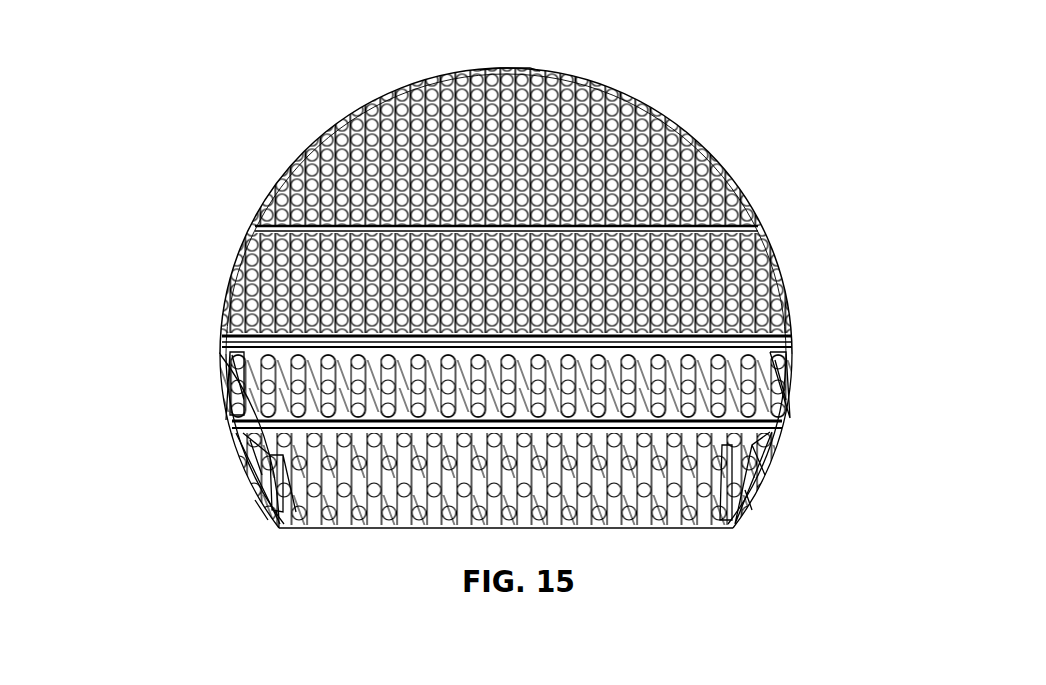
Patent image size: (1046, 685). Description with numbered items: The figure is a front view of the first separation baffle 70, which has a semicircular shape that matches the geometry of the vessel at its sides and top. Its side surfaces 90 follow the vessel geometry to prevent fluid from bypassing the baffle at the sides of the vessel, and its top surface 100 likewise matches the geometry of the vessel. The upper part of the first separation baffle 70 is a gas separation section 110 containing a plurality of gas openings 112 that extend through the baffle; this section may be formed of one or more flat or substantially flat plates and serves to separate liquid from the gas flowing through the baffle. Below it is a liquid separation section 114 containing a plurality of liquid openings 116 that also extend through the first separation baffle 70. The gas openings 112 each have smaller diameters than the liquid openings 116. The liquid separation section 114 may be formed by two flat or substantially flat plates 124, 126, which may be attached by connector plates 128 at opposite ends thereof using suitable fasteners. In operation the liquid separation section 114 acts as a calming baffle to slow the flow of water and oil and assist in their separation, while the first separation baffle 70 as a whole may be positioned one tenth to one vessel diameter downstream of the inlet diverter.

The first separation baffle 70 is at (815, 87).
The side surface 90 is at (793, 338).
The top surface 100 is at (510, 70).
The gas separation section 110 is at (730, 158).
The gas openings 112 is at (637, 127).
The liquid separation section 114 is at (795, 368).
The liquid openings 116 is at (740, 412).
The plate 124 is at (223, 340).
The plate 126 is at (230, 433).
The connector plates 128 is at (767, 470).